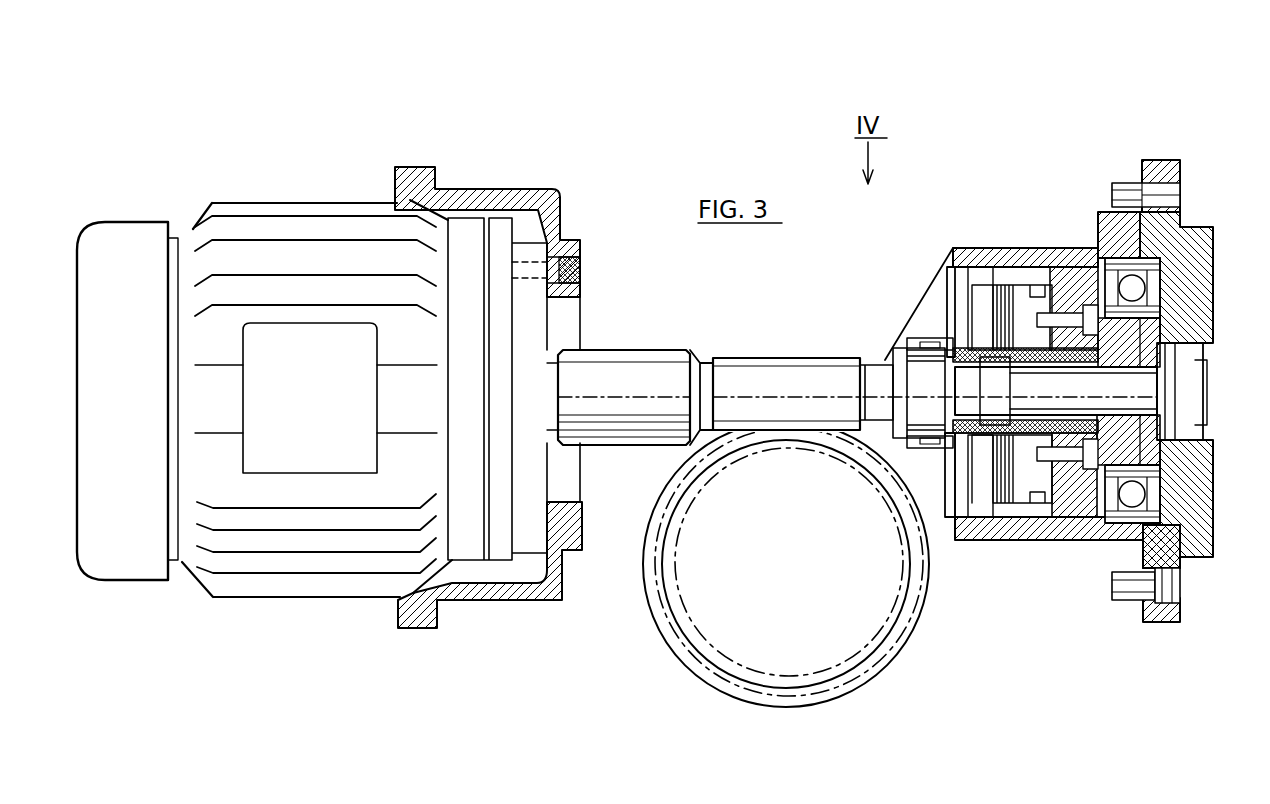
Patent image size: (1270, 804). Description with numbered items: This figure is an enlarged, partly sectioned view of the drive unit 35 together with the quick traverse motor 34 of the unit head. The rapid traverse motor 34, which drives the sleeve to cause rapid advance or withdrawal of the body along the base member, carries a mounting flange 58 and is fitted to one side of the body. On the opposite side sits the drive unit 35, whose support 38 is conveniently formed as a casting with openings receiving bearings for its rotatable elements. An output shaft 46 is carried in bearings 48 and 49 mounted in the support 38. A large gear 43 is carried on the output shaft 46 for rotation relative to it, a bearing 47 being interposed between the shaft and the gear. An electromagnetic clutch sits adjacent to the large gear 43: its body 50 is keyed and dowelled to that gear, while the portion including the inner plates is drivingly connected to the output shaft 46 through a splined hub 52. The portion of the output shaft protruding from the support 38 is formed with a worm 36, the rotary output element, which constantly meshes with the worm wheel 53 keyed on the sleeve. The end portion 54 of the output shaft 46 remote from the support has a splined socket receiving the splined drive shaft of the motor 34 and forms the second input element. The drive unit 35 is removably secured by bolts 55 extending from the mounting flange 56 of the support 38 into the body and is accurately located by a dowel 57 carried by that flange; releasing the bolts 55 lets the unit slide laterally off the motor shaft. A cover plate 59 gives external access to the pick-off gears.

The rapid traverse motor 34 is at (306, 203).
The drive unit 35 is at (903, 264).
The worm 36 is at (780, 355).
The support 38 is at (999, 540).
The large gear 43 is at (1076, 270).
The output shaft 46 is at (877, 347).
The bearing 47 is at (1068, 508).
The bearing 48 is at (1110, 258).
The bearing 49 is at (920, 344).
The clutch body 50 is at (1030, 276).
The splined hub 52 is at (940, 334).
The worm wheel 53 is at (692, 672).
The end portion 54 is at (642, 352).
The bolts 55 is at (1126, 600).
The mounting flange 56 is at (1166, 622).
The dowel 57 is at (1116, 182).
The mounting flange 58 is at (434, 630).
The cover plate 59 is at (1198, 556).